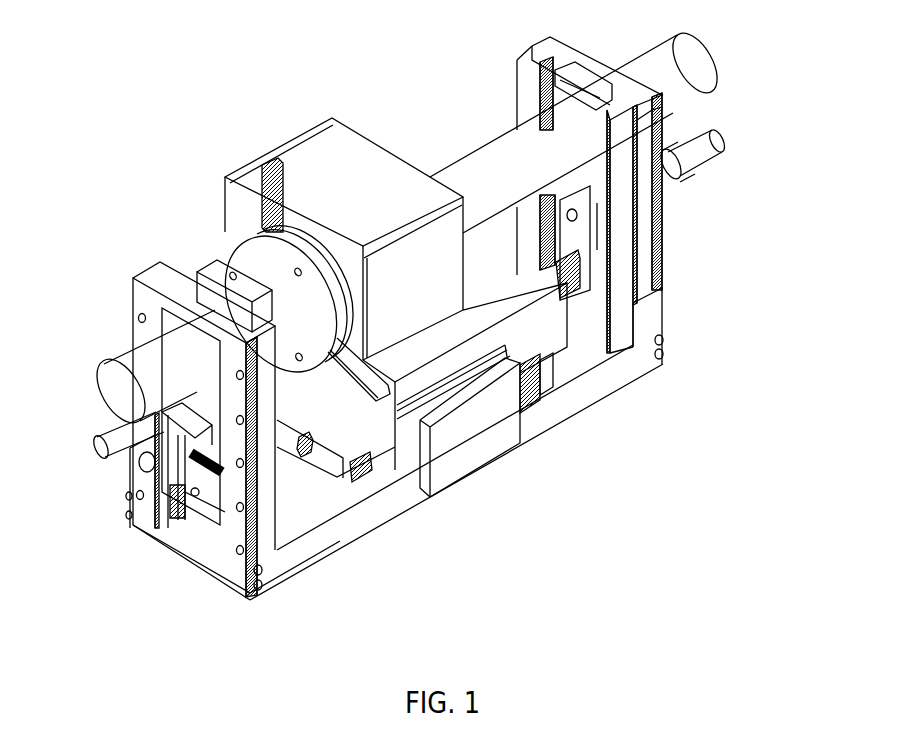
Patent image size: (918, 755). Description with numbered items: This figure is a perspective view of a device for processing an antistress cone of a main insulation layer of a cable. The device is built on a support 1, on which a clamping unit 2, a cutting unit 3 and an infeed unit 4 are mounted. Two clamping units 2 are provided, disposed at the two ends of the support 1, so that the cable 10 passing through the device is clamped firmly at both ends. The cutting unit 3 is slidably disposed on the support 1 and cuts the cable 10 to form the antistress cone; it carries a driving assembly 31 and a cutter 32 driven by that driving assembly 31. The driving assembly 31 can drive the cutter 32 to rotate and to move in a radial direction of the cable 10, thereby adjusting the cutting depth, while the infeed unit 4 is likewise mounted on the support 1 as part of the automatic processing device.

The support 1 is at (322, 547).
The clamping unit 2 is at (648, 227).
The cutting unit 3 is at (406, 226).
The infeed unit 4 is at (578, 322).
The cable 10 is at (502, 158).
The driving assembly 31 is at (250, 258).
The cutter 32 is at (336, 265).